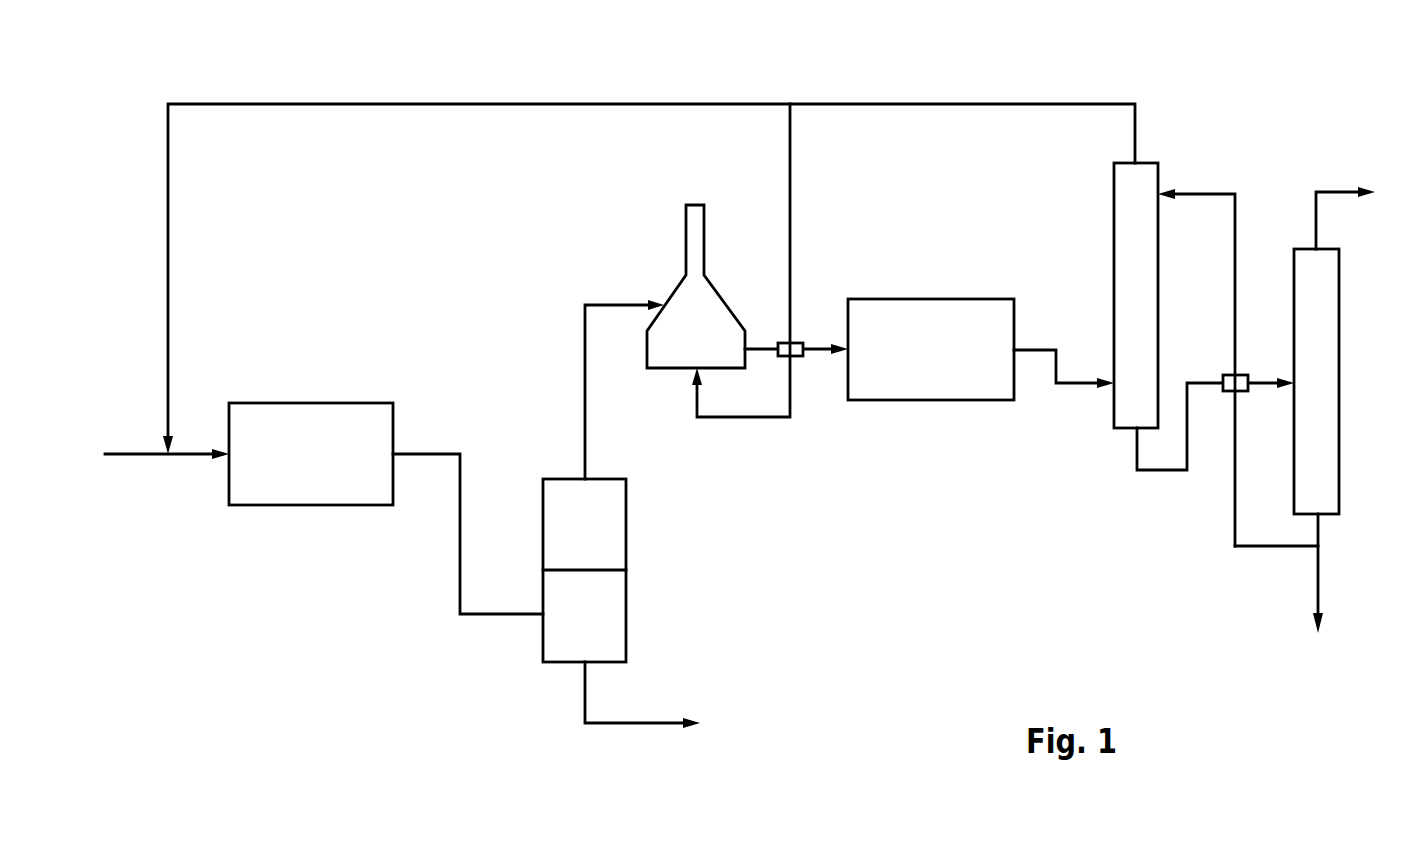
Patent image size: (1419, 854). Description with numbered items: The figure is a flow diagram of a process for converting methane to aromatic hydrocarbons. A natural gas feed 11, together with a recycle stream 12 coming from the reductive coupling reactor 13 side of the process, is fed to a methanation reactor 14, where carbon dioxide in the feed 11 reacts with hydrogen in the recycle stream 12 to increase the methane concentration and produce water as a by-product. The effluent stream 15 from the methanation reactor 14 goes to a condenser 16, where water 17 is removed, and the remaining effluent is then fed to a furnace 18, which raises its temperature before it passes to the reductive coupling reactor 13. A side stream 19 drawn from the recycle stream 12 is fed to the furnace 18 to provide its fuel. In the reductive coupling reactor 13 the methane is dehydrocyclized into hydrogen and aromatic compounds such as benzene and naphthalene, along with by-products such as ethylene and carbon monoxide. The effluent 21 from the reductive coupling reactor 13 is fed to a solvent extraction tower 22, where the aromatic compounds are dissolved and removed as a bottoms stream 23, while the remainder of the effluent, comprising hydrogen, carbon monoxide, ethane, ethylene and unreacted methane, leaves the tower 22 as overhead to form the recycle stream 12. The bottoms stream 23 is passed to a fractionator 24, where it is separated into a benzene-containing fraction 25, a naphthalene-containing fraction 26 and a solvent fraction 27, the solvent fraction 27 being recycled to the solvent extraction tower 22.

The natural gas feed 11 is at (128, 455).
The recycle stream 12 is at (168, 243).
The reductive coupling reactor 13 is at (947, 400).
The methanation reactor 14 is at (350, 505).
The effluent stream 15 is at (435, 452).
The condenser 16 is at (626, 538).
The water 17 is at (648, 723).
The furnace 18 is at (686, 238).
The side stream 19 is at (790, 163).
The effluent 21 is at (1085, 385).
The solvent extraction tower 22 is at (1160, 165).
The bottoms stream 23 is at (1160, 472).
The fractionator 24 is at (1341, 338).
The benzene-containing fraction 25 is at (1335, 190).
The naphthalene-containing fraction 26 is at (1316, 578).
The solvent fraction 27 is at (1235, 517).